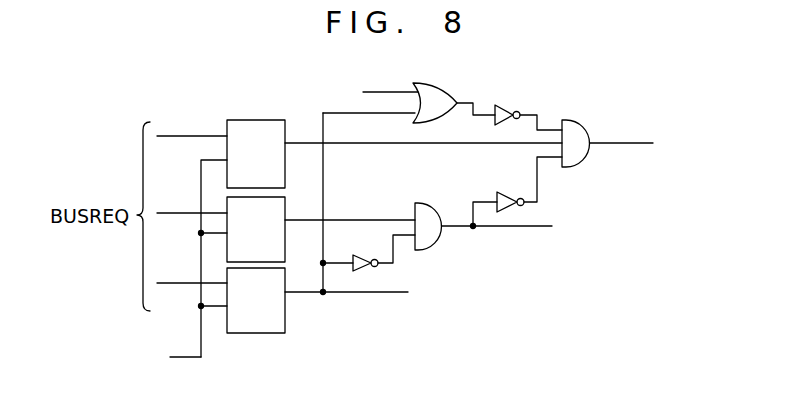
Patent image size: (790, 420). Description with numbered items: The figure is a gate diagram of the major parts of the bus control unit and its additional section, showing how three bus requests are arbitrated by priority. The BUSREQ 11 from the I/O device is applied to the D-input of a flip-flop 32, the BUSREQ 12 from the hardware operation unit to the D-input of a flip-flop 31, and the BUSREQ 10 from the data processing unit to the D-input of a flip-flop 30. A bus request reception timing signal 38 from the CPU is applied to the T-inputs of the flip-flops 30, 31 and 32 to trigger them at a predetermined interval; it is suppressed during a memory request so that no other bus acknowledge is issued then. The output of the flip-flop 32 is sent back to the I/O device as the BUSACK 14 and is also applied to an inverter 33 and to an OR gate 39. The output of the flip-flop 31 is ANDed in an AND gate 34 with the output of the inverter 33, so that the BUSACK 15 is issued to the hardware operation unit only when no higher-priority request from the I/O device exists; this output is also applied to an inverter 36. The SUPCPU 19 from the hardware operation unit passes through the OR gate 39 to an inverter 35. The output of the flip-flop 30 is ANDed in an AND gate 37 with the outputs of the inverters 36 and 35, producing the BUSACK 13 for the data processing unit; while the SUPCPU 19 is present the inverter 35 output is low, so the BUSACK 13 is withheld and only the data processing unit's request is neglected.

The BUSREQ 10 is at (181, 135).
The BUSREQ 11 is at (180, 283).
The BUSREQ 12 is at (178, 213).
The BUSACK 13 is at (630, 143).
The BUSACK 14 is at (376, 292).
The BUSACK 15 is at (510, 226).
The SUPCPU 19 is at (391, 92).
The flip-flop 30 is at (253, 120).
The flip-flop 31 is at (293, 191).
The flip-flop 32 is at (285, 318).
The inverter 33 is at (364, 256).
The AND gate 34 is at (436, 206).
The inverter 35 is at (507, 105).
The inverter 36 is at (507, 193).
The AND gate 37 is at (575, 120).
The bus request reception timing signal 38 is at (185, 360).
The OR gate 39 is at (441, 68).